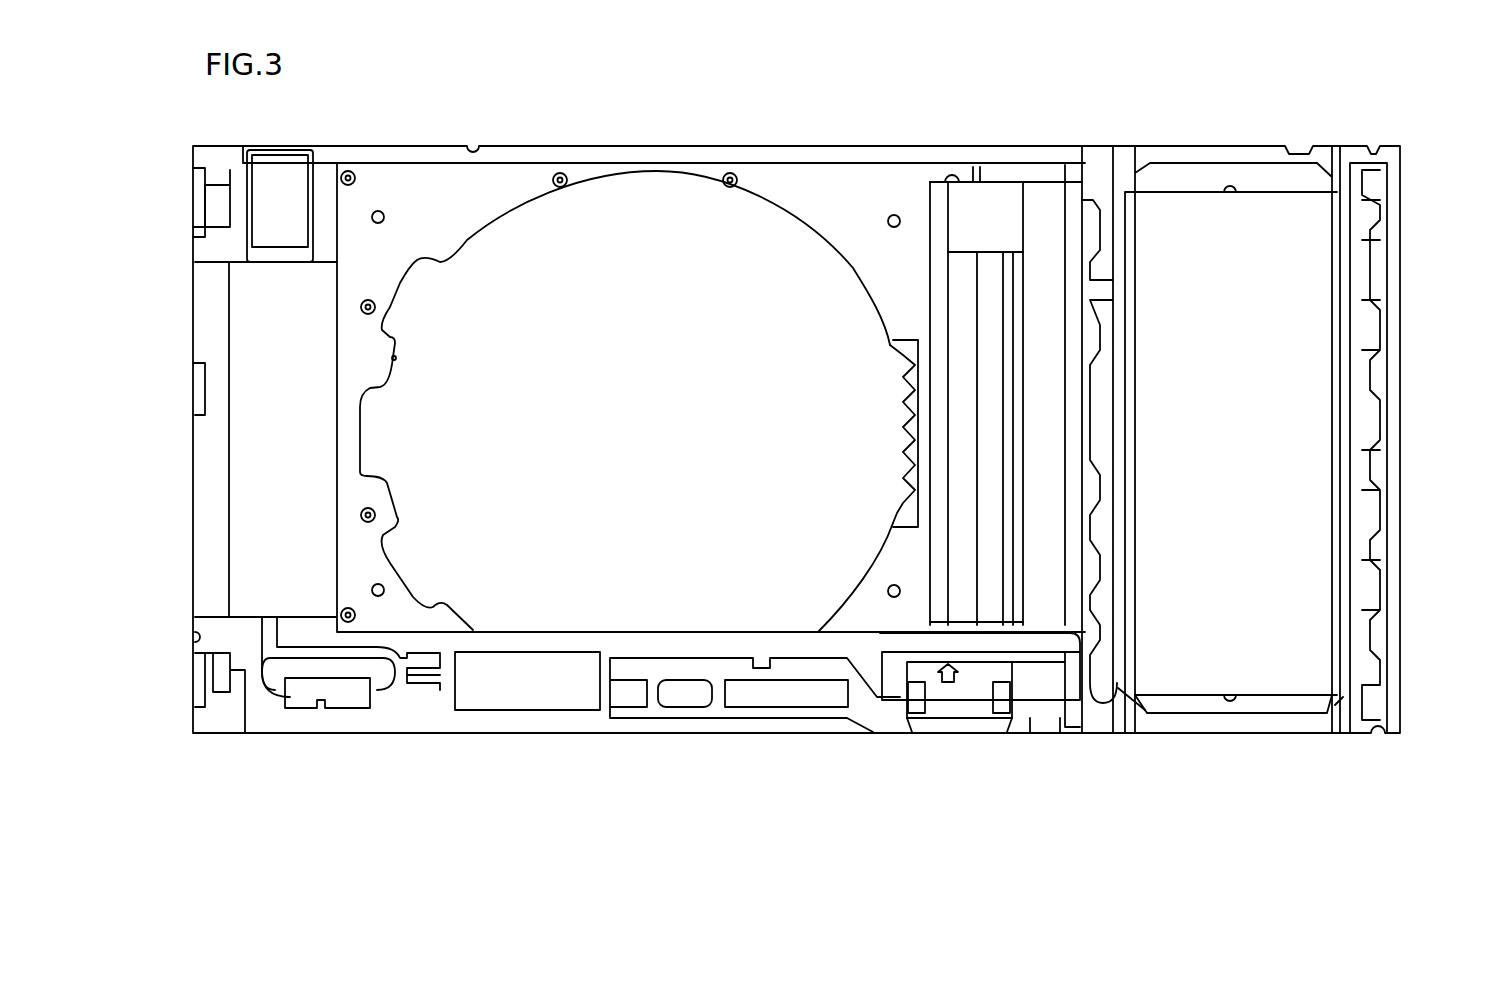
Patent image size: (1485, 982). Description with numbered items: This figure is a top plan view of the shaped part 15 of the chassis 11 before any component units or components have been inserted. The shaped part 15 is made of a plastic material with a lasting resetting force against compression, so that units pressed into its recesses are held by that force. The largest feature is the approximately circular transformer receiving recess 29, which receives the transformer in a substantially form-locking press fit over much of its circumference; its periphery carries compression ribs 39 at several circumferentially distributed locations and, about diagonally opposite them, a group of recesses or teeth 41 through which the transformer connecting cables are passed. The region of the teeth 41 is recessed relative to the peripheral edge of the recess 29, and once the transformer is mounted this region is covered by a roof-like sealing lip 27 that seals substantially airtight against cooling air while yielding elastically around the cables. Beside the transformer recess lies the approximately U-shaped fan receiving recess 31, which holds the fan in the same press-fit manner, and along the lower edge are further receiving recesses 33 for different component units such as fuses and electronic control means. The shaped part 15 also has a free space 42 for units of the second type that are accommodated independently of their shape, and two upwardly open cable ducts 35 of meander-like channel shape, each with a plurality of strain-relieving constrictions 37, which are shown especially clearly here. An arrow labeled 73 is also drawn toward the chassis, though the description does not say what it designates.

The chassis 11 is at (610, 738).
The shaped part 15 is at (379, 717).
The sealing lip 27 is at (920, 340).
The transformer receiving recess 29 is at (648, 487).
The fan receiving recess 31 is at (945, 712).
The receiving recesses 33 is at (767, 697).
The cable ducts 35 is at (1145, 710).
The strain-relieving constrictions 37 is at (1370, 640).
The compression ribs 39 is at (395, 357).
The teeth 41 is at (912, 438).
The free space 42 is at (1233, 483).
The chassis assembly 73 is at (1344, 122).